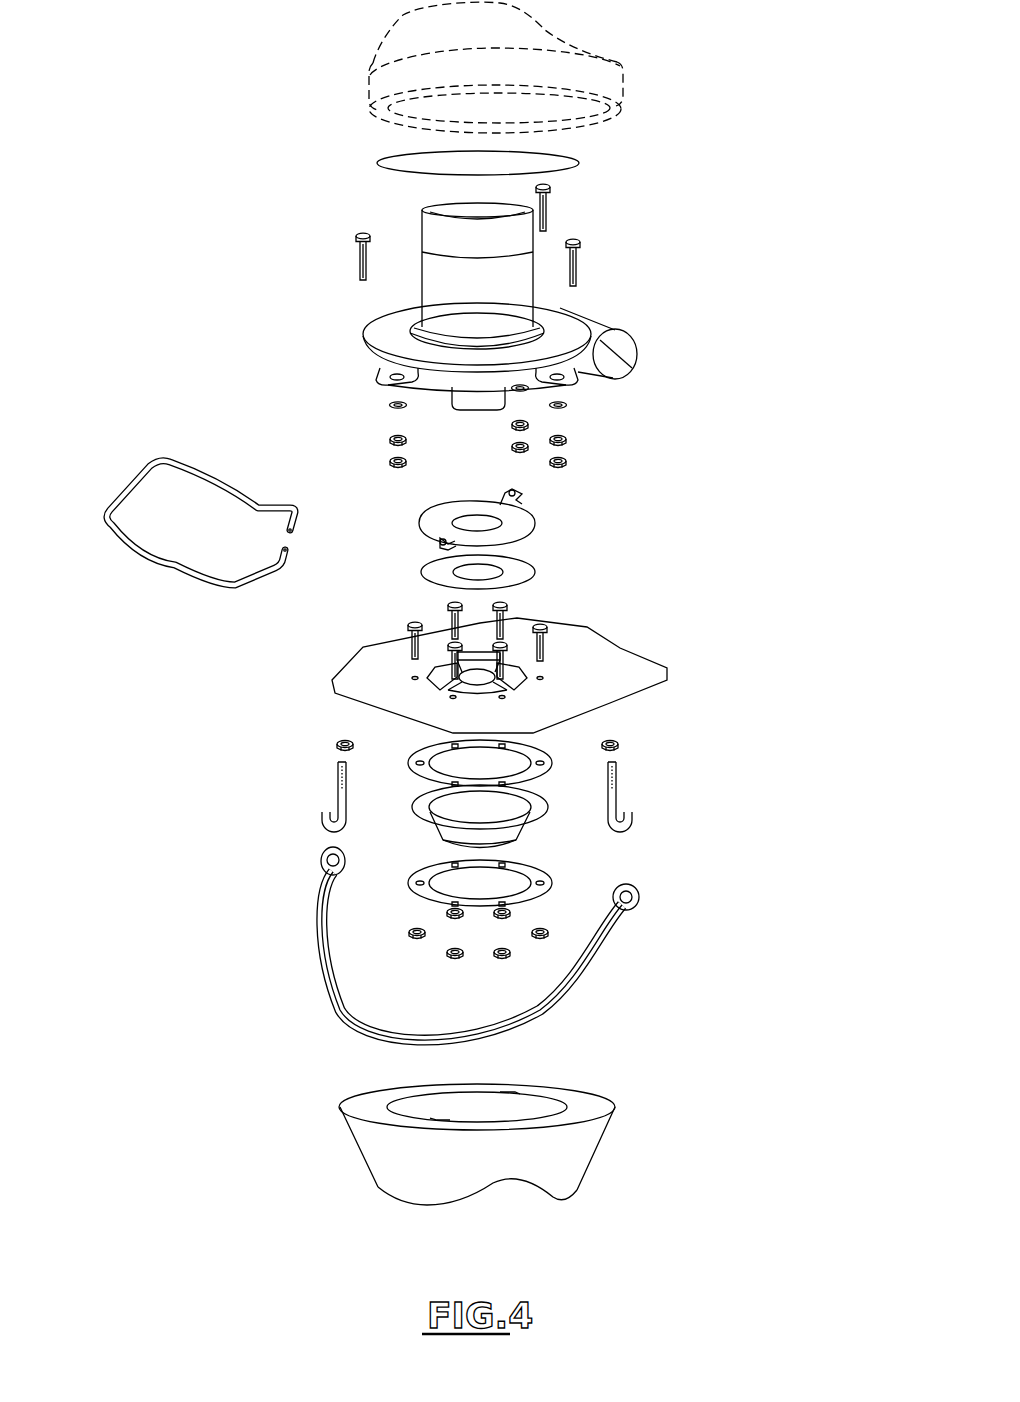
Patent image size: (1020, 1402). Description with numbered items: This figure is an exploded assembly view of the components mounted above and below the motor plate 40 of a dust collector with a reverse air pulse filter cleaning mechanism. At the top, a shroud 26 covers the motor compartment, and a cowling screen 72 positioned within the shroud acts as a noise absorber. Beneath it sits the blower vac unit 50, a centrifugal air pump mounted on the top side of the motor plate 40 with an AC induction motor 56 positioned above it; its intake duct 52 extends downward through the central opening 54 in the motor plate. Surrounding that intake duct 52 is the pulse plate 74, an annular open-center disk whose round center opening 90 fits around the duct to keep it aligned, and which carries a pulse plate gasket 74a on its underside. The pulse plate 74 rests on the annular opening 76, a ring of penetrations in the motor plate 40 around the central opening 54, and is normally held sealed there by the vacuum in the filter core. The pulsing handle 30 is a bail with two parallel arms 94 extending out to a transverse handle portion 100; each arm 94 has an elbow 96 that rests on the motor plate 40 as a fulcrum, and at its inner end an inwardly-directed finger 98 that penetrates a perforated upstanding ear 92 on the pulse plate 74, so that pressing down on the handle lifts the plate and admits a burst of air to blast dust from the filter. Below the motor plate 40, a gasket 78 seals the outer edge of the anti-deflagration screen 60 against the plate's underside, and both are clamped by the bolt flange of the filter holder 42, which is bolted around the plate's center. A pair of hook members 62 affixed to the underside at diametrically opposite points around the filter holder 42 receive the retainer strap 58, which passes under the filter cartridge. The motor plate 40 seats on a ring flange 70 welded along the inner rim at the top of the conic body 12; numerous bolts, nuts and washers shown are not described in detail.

The conic body 12 is at (503, 1122).
The shroud 26 is at (380, 110).
The pulsing handle 30 is at (221, 534).
The motor plate 40 is at (502, 667).
The filter holder 42 is at (546, 888).
The blower vac unit 50 is at (487, 327).
The intake duct 52 is at (472, 403).
The central opening 54 is at (540, 670).
The AC induction motor 56 is at (421, 264).
The retainer strap 58 is at (568, 972).
The anti-deflagration screen 60 is at (520, 820).
The hook members 62 is at (338, 792).
The ring flange 70 is at (580, 1105).
The cowling screen 72 is at (567, 170).
The pulse plate 74 is at (484, 508).
The pulse plate gasket 74a is at (431, 572).
The annular opening 76 is at (438, 675).
The gasket 78 is at (532, 776).
The round center opening 90 is at (240, 590).
The upstanding ears 92 is at (443, 539).
The arms 94 is at (207, 490).
The elbow 96 is at (250, 502).
The finger 98 is at (297, 521).
The transverse handle portion 100 is at (221, 532).